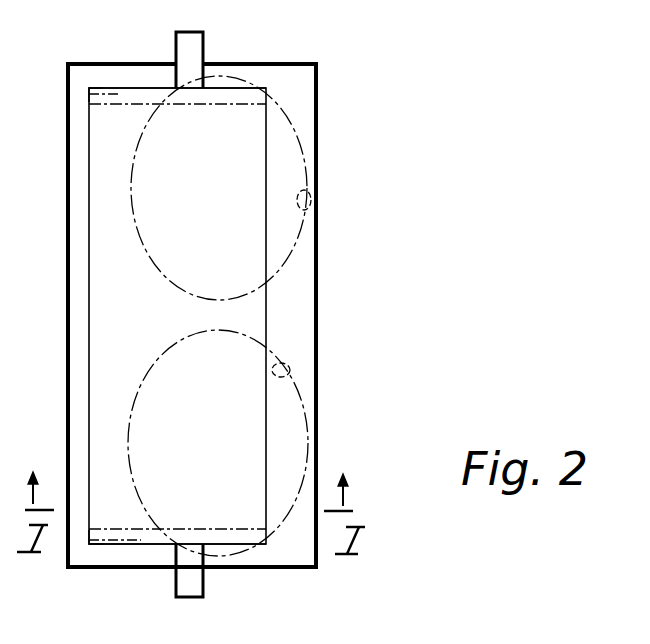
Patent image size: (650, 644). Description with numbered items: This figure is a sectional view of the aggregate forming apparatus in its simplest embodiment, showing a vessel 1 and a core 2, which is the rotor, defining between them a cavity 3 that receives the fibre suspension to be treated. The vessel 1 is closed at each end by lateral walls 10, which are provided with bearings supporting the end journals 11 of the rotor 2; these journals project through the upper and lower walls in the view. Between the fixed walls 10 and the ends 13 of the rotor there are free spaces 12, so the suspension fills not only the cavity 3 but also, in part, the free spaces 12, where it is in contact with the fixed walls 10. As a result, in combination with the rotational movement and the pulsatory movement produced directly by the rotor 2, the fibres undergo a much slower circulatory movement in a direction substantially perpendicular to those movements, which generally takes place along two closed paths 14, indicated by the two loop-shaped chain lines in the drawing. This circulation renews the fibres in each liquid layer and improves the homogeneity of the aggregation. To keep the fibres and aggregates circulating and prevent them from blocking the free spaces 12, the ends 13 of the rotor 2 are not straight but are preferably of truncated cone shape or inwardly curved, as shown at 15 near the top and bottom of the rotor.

The vessel 1 is at (322, 132).
The core 2 is at (100, 152).
The cavity 3 is at (283, 322).
The lateral walls 10 is at (289, 62).
The end journals 11 is at (188, 40).
The free spaces 12 is at (121, 73).
The ends of the rotor 13 is at (100, 86).
The closed paths 14 is at (309, 188).
The inwardly curved shape 15 is at (88, 94).